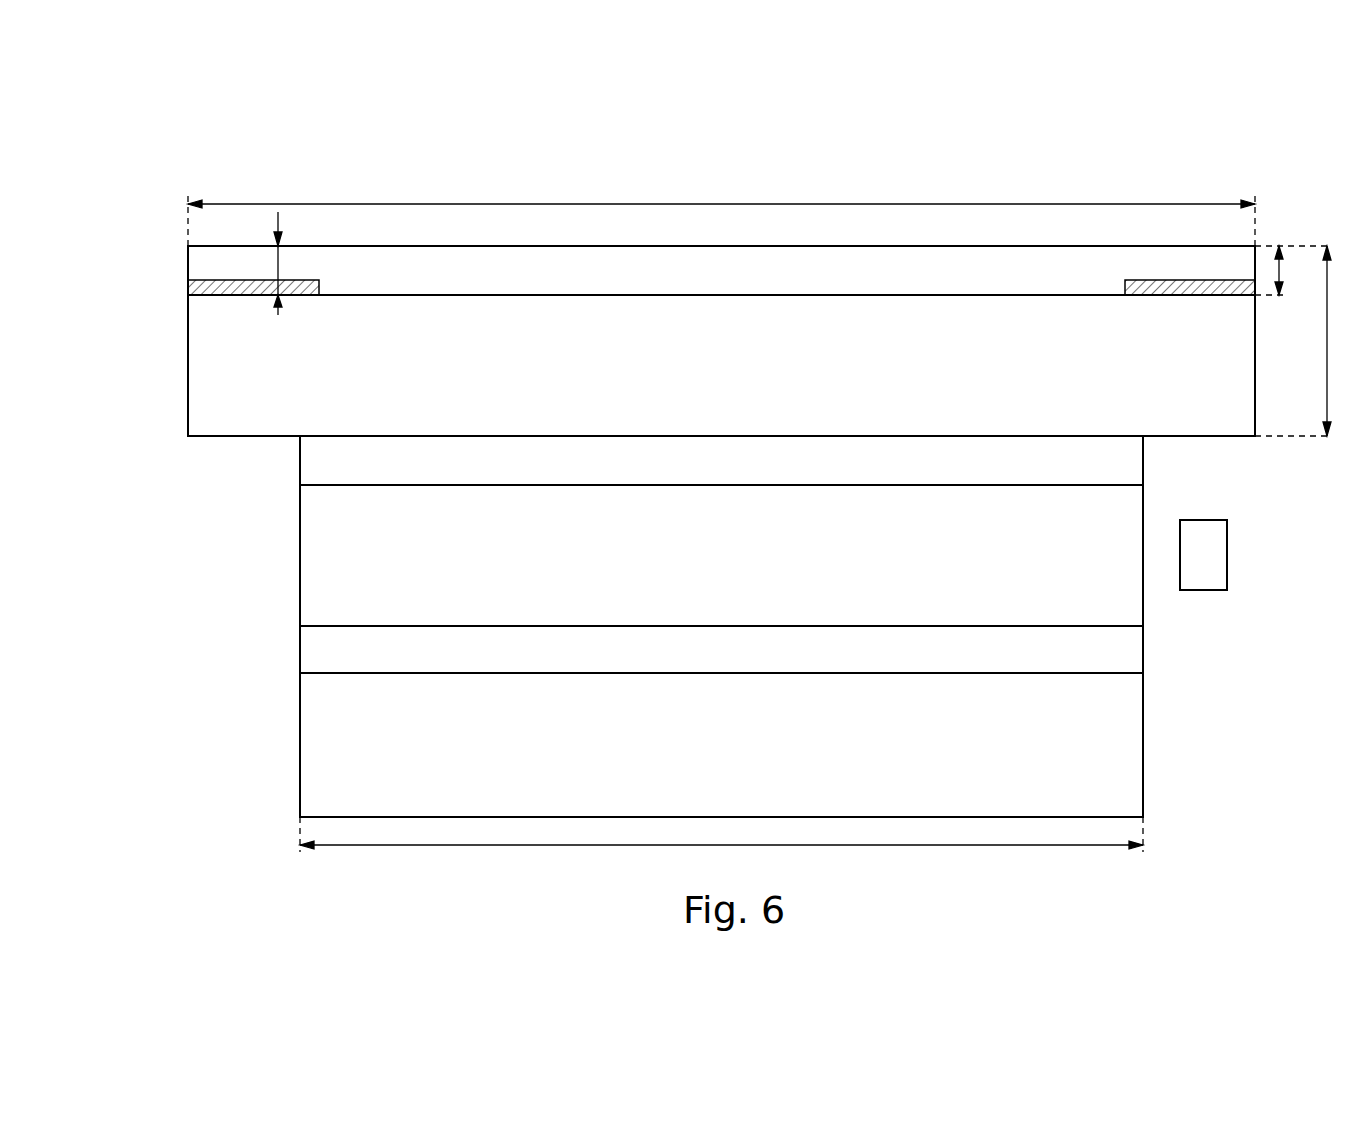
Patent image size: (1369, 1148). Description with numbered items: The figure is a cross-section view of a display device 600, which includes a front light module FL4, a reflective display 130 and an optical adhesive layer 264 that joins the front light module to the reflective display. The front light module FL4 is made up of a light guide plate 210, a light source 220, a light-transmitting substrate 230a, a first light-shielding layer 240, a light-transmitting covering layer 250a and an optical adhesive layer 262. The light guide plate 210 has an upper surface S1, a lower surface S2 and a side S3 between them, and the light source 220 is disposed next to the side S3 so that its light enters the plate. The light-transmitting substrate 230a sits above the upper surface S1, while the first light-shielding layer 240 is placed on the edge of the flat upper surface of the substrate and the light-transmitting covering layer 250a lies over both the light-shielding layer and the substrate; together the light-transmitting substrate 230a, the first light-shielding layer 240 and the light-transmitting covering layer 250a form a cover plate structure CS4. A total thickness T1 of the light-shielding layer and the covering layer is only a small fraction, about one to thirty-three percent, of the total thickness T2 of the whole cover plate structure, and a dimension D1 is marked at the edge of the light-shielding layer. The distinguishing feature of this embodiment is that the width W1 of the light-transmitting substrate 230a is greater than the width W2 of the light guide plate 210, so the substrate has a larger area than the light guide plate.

The display device 600 is at (232, 98).
The reflective display 130 is at (305, 741).
The light guide plate 210 is at (305, 547).
The light source 220 is at (1215, 555).
The light-transmitting substrate 230a is at (195, 361).
The first light-shielding layer 240 is at (195, 285).
The light-transmitting covering layer 250a is at (195, 263).
The optical adhesive layer 262 is at (305, 459).
The optical adhesive layer 264 is at (305, 648).
The upper surface S1 is at (412, 485).
The lower surface S2 is at (370, 626).
The side S3 is at (1143, 498).
The front light module FL4 is at (119, 605).
The cover plate structure CS4 is at (124, 820).
The width of the light-transmitting substrate W1 is at (721, 207).
The width of the light guide plate W2 is at (721, 847).
The total thickness of the first light-shielding layer and the light-transmitting co T1 is at (1293, 270).
The total thickness of the light-transmitting substrate, the first light-shielding l T2 is at (1308, 341).
The depth D1 is at (299, 263).